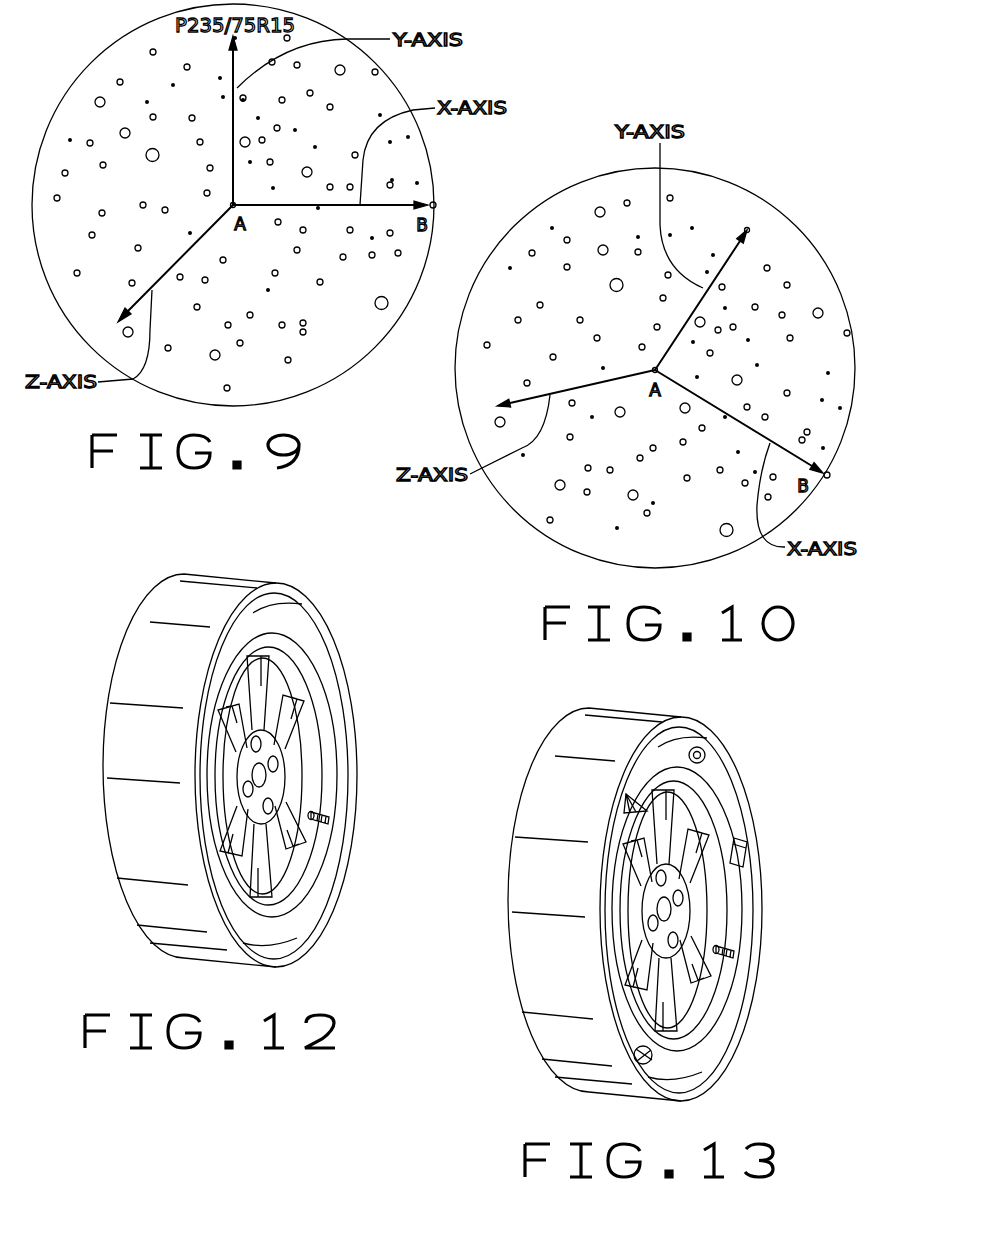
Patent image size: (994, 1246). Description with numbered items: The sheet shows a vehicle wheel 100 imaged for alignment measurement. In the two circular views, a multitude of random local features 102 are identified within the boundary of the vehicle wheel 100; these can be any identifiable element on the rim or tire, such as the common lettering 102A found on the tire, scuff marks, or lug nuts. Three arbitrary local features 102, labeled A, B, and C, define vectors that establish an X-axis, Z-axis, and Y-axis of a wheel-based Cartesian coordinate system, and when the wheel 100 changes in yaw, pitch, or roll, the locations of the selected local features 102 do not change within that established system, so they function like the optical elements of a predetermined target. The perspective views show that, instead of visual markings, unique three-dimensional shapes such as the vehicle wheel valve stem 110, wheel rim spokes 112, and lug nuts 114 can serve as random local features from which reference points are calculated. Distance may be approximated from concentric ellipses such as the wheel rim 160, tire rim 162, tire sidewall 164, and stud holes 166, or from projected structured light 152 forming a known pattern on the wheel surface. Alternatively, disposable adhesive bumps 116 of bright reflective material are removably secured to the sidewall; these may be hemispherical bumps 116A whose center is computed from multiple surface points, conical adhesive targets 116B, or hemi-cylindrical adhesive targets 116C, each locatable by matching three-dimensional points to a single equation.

In FIG. 9, the vehicle wheel 100 is at (62, 98).
In FIG. 10, the vehicle wheel 100 is at (496, 493).
In FIG. 12, the vehicle wheel 100 is at (342, 863).
In FIG. 13, the vehicle wheel 100 is at (696, 909).
In FIG. 10, the random local features 102 is at (848, 330).
In FIG. 10, the common lettering 102A is at (808, 260).
In FIG. 12, the vehicle wheel valve stem 110 is at (327, 820).
In FIG. 13, the vehicle wheel valve stem 110 is at (768, 960).
In FIG. 13, the wheel rim spoke 112 is at (584, 910).
In FIG. 12, the lug nut 114 is at (248, 790).
In FIG. 13, the lug nut 114 is at (566, 911).
In FIG. 13, the adhesive three-dimensional bumps 116 is at (743, 735).
In FIG. 13, the hemispherical adhesive bump 116A is at (557, 1071).
In FIG. 13, the conical adhesive target 116B is at (555, 784).
In FIG. 13, the hemi-cylindrical adhesive target 116C is at (778, 831).
In FIG. 12, the structured light 152 is at (293, 730).
In FIG. 12, the wheel rim 160 is at (312, 650).
In FIG. 12, the tire rim 162 is at (283, 580).
In FIG. 12, the tire sidewall 164 is at (260, 625).
In FIG. 12, the stud holes 166 is at (257, 745).